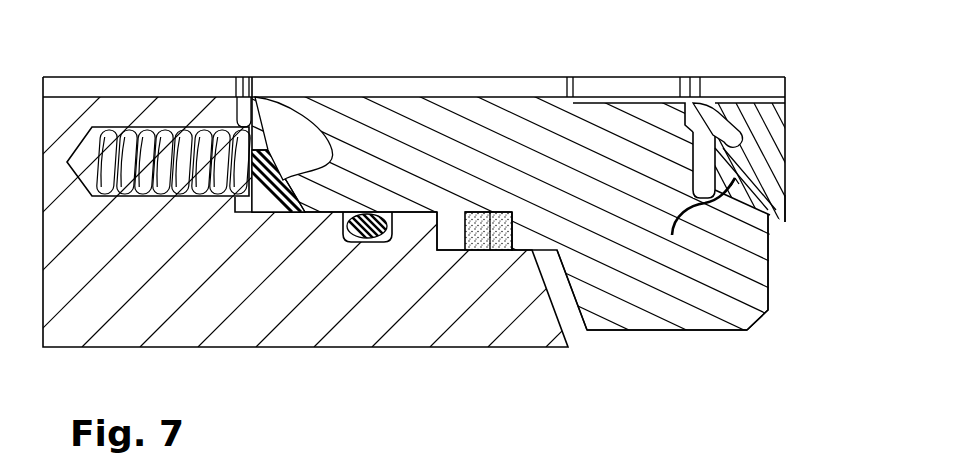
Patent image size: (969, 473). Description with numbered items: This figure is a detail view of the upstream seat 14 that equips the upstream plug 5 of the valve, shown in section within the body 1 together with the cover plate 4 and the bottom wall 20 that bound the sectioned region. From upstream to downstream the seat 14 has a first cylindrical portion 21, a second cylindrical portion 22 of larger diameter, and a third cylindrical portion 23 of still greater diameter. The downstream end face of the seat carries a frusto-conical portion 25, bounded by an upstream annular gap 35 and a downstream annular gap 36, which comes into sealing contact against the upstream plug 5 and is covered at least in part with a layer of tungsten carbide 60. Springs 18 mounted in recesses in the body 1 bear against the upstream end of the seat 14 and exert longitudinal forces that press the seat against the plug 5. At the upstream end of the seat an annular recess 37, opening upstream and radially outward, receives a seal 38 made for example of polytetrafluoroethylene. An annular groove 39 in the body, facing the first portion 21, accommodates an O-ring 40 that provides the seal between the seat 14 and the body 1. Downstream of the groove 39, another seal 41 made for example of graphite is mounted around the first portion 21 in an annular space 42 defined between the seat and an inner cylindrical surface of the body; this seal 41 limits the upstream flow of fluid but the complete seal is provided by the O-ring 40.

The body 1 is at (246, 335).
The cover plate 4 is at (357, 90).
The upstream plug 5 is at (763, 138).
The upstream seat 14 is at (700, 298).
The springs 18 is at (175, 125).
The bottom wall 20 is at (684, 340).
The first cylindrical portion 21 is at (426, 153).
The second cylindrical portion 22 is at (535, 218).
The third cylindrical portion 23 is at (628, 265).
The frusto-conical portion 25 is at (732, 200).
The upstream annular gap 35 is at (785, 195).
The downstream annular gap 36 is at (715, 158).
The annular recess 37 is at (330, 140).
The seal 38 is at (262, 150).
The annular groove 39 is at (395, 233).
The O-ring 40 is at (352, 245).
The seal 41 is at (490, 222).
The annular space 42 is at (450, 250).
The layer of tungsten carbide 60 is at (672, 235).